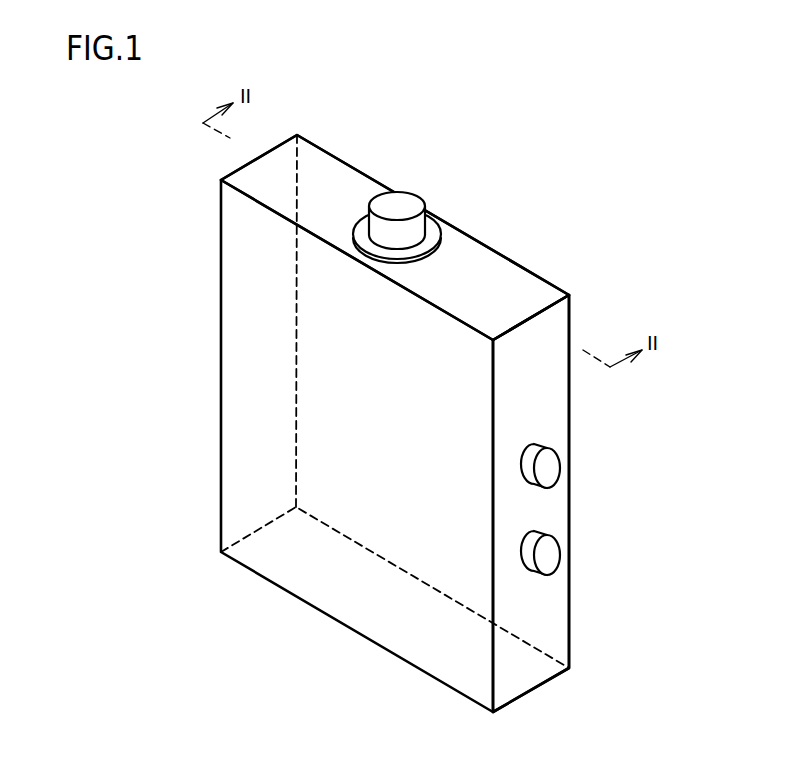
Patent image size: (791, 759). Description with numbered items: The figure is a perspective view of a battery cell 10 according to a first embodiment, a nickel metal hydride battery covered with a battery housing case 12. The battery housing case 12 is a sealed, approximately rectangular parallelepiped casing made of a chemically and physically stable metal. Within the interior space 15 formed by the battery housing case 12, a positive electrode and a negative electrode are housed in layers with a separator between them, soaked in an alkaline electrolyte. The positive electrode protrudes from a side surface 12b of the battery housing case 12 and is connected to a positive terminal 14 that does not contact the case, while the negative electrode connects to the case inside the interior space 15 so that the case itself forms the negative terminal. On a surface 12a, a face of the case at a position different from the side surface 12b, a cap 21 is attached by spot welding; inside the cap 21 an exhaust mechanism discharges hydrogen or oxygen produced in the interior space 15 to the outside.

The battery cell 10 is at (578, 203).
The battery housing case 12 is at (253, 362).
The surface 12a is at (329, 172).
The side surface 12b is at (547, 625).
The positive terminal 14 is at (547, 560).
The interior space 15 is at (333, 487).
The cap 21 is at (397, 198).